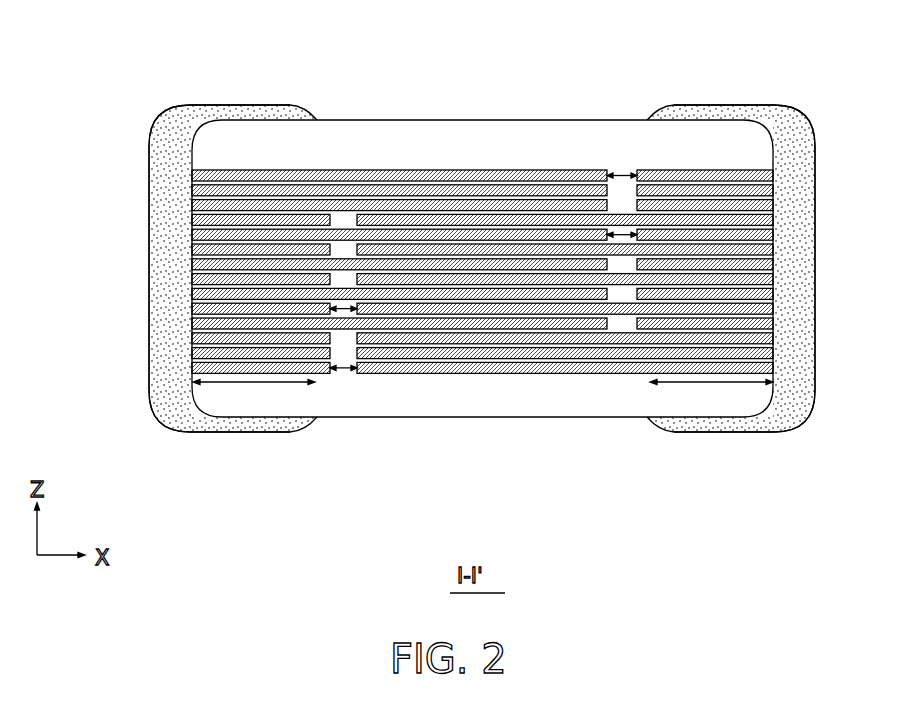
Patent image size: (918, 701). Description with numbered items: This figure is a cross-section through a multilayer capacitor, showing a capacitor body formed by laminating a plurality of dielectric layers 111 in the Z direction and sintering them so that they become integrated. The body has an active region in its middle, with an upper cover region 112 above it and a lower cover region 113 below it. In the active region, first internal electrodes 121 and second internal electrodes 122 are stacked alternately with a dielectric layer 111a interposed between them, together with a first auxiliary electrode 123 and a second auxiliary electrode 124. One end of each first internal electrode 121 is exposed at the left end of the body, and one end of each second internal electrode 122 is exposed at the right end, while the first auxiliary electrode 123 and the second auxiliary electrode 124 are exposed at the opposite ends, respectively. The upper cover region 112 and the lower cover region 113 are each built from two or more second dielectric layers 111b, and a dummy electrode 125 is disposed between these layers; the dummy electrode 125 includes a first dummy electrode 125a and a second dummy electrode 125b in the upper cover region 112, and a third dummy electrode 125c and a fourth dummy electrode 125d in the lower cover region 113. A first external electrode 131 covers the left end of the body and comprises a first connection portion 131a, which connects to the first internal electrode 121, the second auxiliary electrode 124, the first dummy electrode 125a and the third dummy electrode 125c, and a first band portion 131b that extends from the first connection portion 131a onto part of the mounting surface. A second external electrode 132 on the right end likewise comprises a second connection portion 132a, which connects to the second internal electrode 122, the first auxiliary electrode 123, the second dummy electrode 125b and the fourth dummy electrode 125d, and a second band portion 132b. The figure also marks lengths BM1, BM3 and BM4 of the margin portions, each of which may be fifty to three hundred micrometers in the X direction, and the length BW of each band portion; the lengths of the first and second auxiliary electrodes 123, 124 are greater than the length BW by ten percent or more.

The dielectric layers 111 is at (81, 14).
The dielectric layer 111a is at (190, 320).
The second dielectric layer 111b is at (777, 182).
The upper cover region 112 is at (455, 137).
The lower cover region 113 is at (456, 400).
The first internal electrode 121 is at (190, 233).
The second internal electrode 122 is at (775, 278).
The first auxiliary electrode 123 is at (775, 233).
The second auxiliary electrode 124 is at (190, 278).
The dummy electrode 125 is at (693, 523).
The first dummy electrode 125a is at (343, 170).
The second dummy electrode 125b is at (710, 172).
The third dummy electrode 125c is at (268, 374).
The fourth dummy electrode 125d is at (588, 374).
The first external electrode 131 is at (203, 316).
The first connection portion 131a is at (150, 357).
The first band portion 131b is at (219, 295).
The second external electrode 132 is at (762, 316).
The second connection portion 132a is at (814, 360).
The second band portion 132b is at (744, 295).
The length of first margin portion BM1 is at (605, 174).
The length of third margin portion BM3 is at (621, 233).
The length of fourth margin portion BM4 is at (337, 371).
The length of band portion BW is at (285, 385).